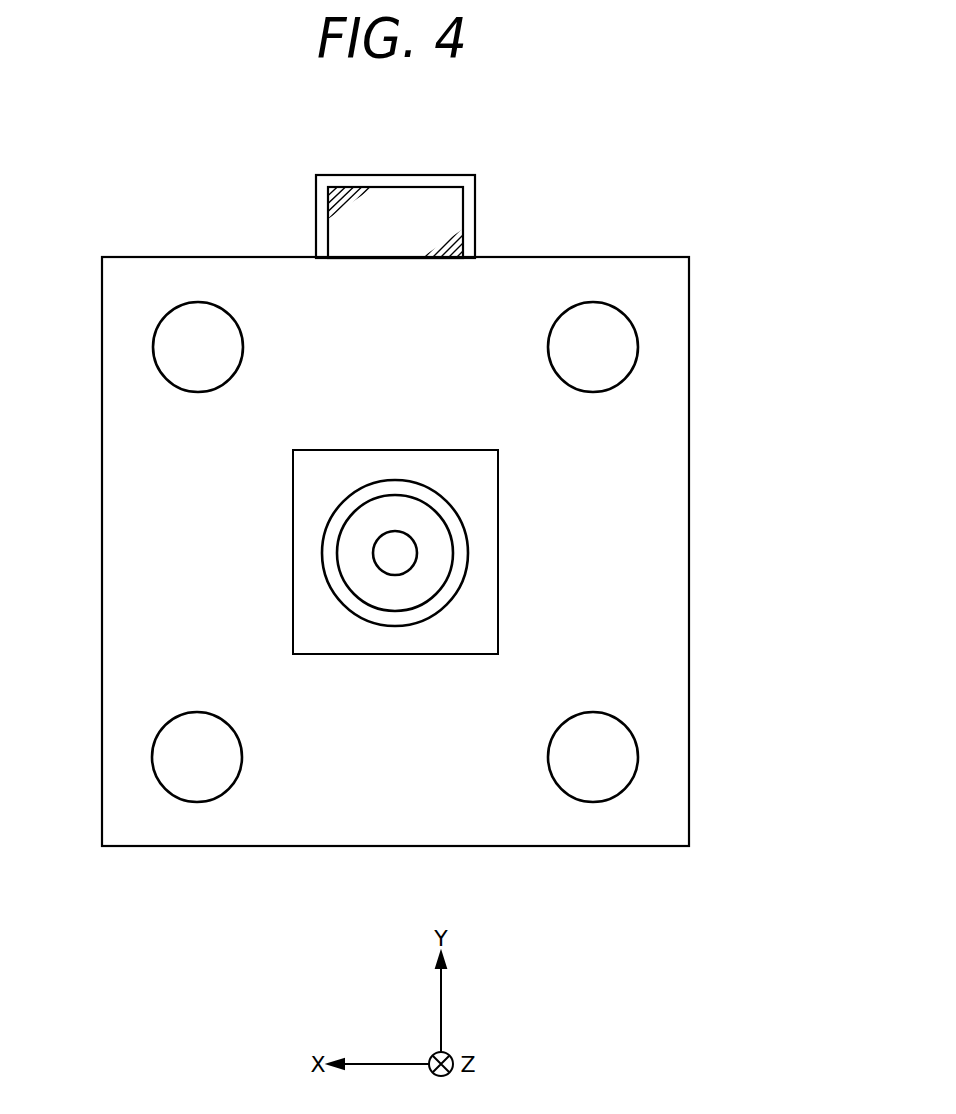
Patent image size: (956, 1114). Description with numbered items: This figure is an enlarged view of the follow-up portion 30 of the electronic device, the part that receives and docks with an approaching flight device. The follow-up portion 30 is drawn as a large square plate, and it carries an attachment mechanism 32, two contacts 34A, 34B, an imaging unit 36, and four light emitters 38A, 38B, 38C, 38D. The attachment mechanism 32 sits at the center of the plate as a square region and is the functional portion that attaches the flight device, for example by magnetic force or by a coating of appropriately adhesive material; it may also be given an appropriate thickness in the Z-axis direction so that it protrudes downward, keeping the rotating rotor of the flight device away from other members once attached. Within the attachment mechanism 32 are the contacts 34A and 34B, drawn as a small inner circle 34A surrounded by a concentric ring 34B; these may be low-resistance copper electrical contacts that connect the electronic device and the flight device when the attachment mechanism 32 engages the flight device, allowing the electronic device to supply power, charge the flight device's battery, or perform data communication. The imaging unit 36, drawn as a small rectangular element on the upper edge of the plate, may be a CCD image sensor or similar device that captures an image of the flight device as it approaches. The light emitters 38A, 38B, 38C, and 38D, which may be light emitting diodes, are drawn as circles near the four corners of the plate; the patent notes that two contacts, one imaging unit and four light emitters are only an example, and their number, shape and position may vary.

The follow-up portion 30 is at (689, 512).
The attachment mechanism 32 is at (487, 552).
The contact 34A is at (392, 553).
The contact 34B is at (395, 485).
The imaging unit 36 is at (393, 175).
The light emitter 38A is at (225, 759).
The light emitter 38B is at (570, 760).
The light emitter 38C is at (571, 351).
The light emitter 38D is at (225, 349).